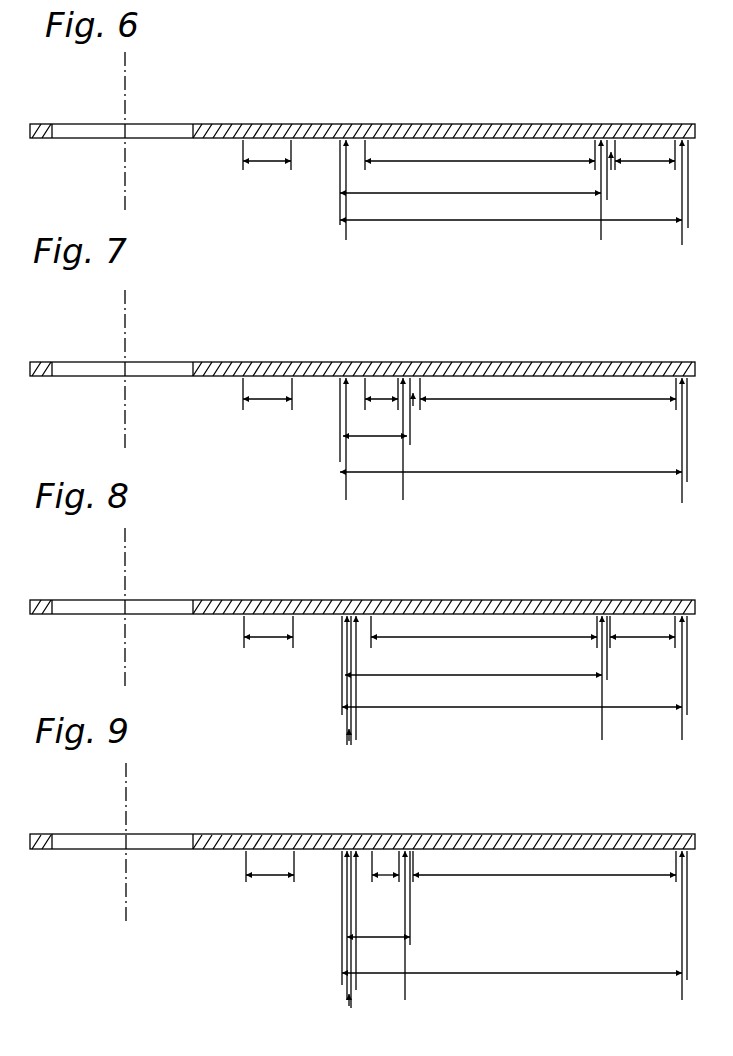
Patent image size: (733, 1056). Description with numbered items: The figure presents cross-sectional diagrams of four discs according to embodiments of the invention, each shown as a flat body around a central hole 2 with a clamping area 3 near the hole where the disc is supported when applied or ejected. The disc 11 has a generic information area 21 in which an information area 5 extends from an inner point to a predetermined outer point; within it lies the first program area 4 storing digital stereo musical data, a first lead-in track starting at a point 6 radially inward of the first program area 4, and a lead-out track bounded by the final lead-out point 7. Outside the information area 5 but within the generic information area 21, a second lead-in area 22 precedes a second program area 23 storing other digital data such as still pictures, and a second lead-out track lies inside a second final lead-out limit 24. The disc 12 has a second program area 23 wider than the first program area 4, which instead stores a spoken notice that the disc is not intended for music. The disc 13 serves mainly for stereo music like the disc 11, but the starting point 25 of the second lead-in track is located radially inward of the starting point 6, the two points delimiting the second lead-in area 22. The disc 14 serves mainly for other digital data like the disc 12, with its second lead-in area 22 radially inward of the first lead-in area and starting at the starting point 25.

In FIG. 6, the central hole 2 is at (146, 127).
In FIG. 7, the central hole 2 is at (147, 365).
In FIG. 8, the central hole 2 is at (148, 603).
In FIG. 9, the central hole 2 is at (150, 838).
In FIG. 6, the disc 11 is at (318, 122).
In FIG. 7, the disc 12 is at (313, 360).
In FIG. 8, the disc 13 is at (309, 598).
In FIG. 9, the disc 14 is at (305, 833).
In FIG. 6, the clamping area 3 is at (268, 163).
In FIG. 7, the clamping area 3 is at (272, 404).
In FIG. 8, the clamping area 3 is at (268, 641).
In FIG. 9, the clamping area 3 is at (271, 878).
In FIG. 6, the first program area 4 is at (470, 162).
In FIG. 7, the first program area 4 is at (379, 400).
In FIG. 8, the first program area 4 is at (499, 639).
In FIG. 9, the first program area 4 is at (379, 878).
In FIG. 6, the information area 5 is at (481, 193).
In FIG. 7, the information area 5 is at (380, 438).
In FIG. 8, the information area 5 is at (501, 677).
In FIG. 9, the information area 5 is at (380, 939).
In FIG. 6, the starting point of the first lead-in track 6 is at (344, 234).
In FIG. 7, the starting point of the first lead-in track 6 is at (347, 488).
In FIG. 8, the starting point of the first lead-in track 6 is at (357, 733).
In FIG. 9, the starting point of the first lead-in track 6 is at (357, 996).
In FIG. 6, the final lead-out point 7 is at (601, 232).
In FIG. 7, the final lead-out point 7 is at (404, 488).
In FIG. 8, the final lead-out point 7 is at (602, 728).
In FIG. 9, the final lead-out point 7 is at (406, 990).
In FIG. 6, the generic information area 21 is at (453, 222).
In FIG. 7, the generic information area 21 is at (542, 474).
In FIG. 6, the second lead-in area 22 is at (611, 170).
In FIG. 7, the second lead-in area 22 is at (413, 406).
In FIG. 8, the second lead-in area 22 is at (351, 744).
In FIG. 9, the second lead-in area 22 is at (351, 1008).
In FIG. 6, the second program area 23 is at (652, 162).
In FIG. 7, the second program area 23 is at (543, 401).
In FIG. 8, the second program area 23 is at (643, 639).
In FIG. 9, the second program area 23 is at (561, 877).
In FIG. 6, the second final lead-out limit 24 is at (682, 240).
In FIG. 7, the second final lead-out limit 24 is at (682, 490).
In FIG. 8, the second final lead-out limit 24 is at (682, 738).
In FIG. 9, the second final lead-out limit 24 is at (682, 998).
In FIG. 8, the starting point of the second lead-in track 25 is at (346, 730).
In FIG. 9, the starting point of the second lead-in track 25 is at (346, 998).